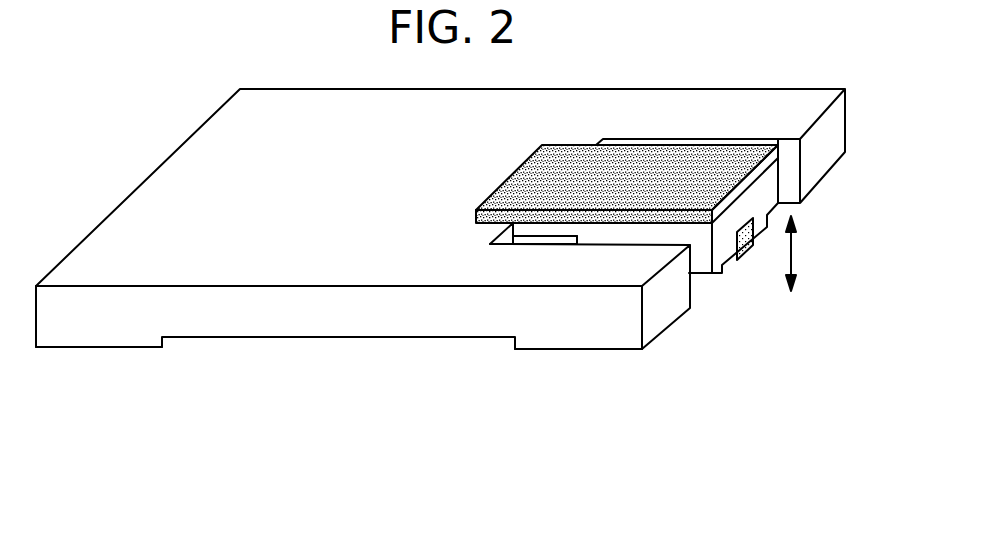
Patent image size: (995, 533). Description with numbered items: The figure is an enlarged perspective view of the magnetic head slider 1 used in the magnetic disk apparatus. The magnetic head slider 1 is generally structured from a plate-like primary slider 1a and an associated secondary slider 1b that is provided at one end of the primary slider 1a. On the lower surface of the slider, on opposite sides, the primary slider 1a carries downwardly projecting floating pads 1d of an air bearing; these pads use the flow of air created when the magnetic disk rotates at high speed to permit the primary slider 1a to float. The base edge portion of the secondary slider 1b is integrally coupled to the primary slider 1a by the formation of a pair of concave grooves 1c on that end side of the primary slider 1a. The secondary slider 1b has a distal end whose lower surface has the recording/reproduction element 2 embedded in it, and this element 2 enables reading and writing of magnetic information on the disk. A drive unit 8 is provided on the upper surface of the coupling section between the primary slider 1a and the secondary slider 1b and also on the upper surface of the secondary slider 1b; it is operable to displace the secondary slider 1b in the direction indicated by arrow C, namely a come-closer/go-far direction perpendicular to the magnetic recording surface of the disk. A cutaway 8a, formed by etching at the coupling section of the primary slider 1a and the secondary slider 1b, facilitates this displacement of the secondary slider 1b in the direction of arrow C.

The magnetic head slider 1 is at (471, 300).
The primary slider 1a is at (425, 252).
The secondary slider 1b is at (607, 233).
The concave grooves 1c is at (697, 282).
The floating pads 1d is at (88, 335).
The recording/reproduction element 2 is at (748, 240).
The drive unit 8 is at (625, 203).
The cutaway 8a is at (540, 237).
The arrow C is at (796, 251).